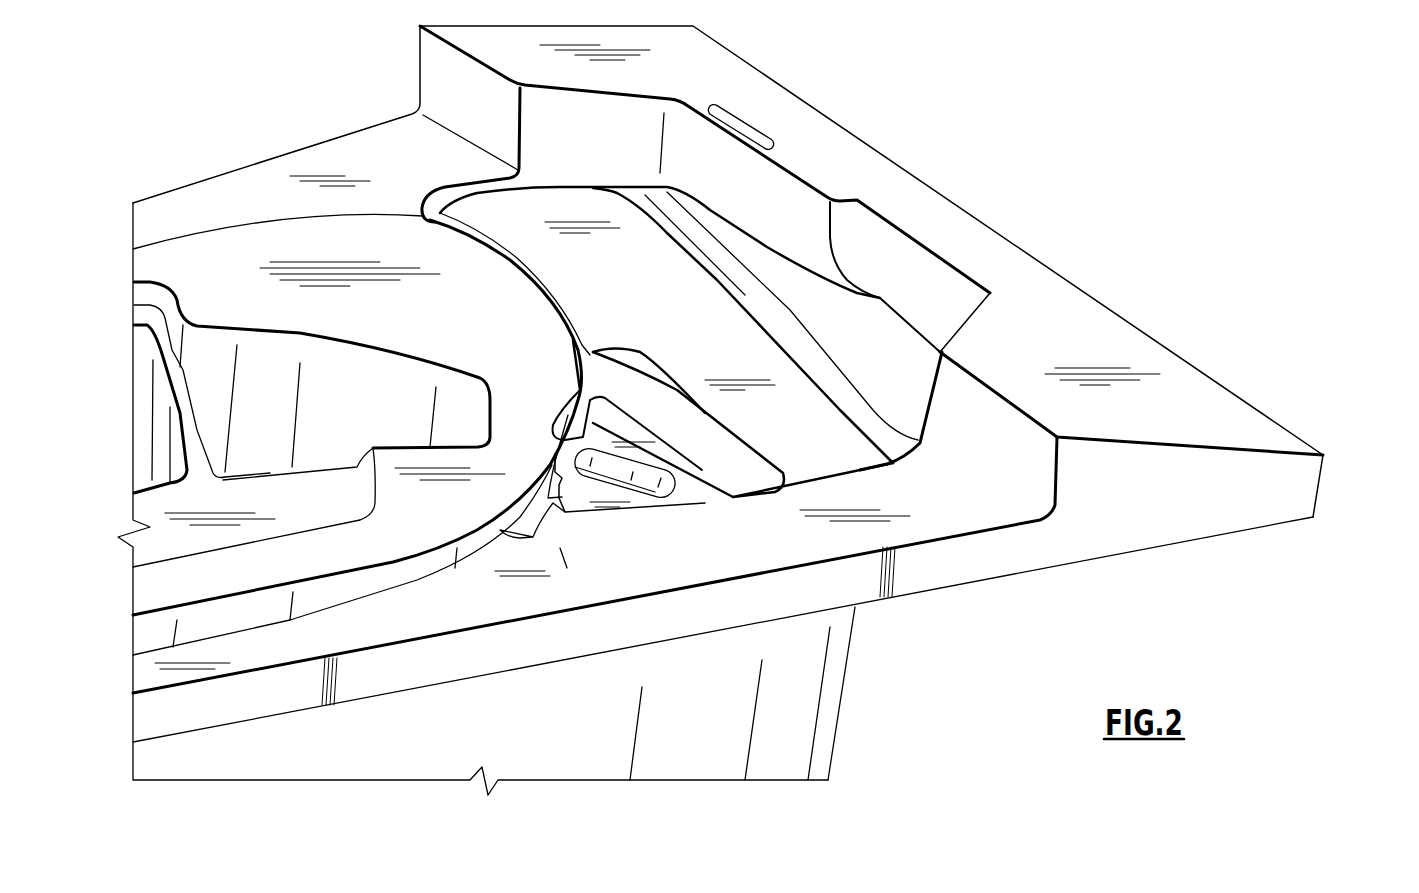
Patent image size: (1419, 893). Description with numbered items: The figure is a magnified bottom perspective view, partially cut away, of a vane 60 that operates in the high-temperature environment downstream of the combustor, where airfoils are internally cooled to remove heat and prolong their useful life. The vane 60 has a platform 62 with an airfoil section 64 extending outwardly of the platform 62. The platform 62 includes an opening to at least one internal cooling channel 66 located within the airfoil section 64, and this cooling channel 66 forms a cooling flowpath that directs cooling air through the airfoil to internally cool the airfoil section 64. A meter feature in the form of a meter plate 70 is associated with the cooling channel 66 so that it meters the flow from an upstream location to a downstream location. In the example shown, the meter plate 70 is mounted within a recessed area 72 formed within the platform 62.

The vane 60 is at (1357, 458).
The platform 62 is at (1073, 340).
The airfoil section 64 is at (782, 712).
The internal cooling channel 66 is at (608, 467).
The meter plate 70 is at (700, 492).
The recessed area 72 is at (563, 525).